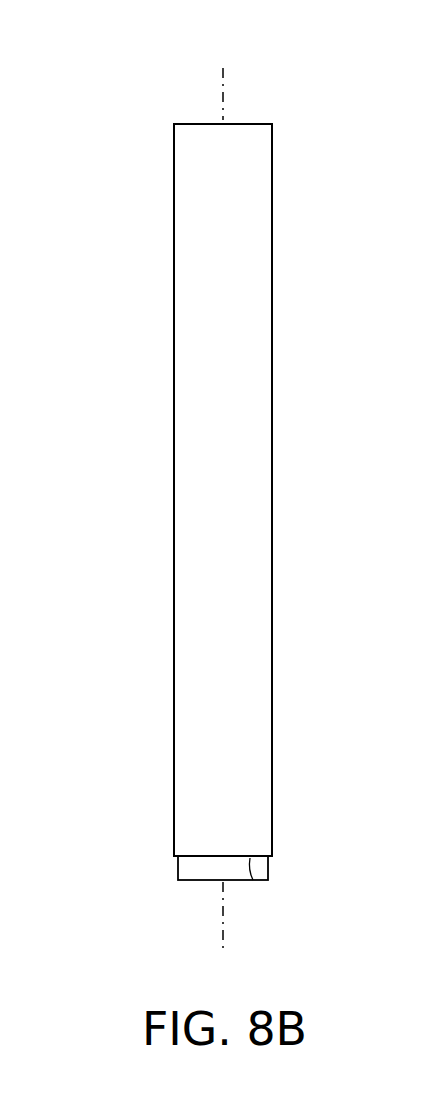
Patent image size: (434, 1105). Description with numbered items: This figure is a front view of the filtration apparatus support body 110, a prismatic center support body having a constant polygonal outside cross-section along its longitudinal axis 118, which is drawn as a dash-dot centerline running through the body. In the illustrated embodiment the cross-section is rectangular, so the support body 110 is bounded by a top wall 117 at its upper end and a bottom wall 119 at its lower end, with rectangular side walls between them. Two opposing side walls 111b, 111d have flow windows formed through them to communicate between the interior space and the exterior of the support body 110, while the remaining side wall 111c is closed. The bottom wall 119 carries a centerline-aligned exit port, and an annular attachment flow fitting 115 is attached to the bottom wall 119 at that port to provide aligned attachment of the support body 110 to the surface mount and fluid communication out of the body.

The prismatic center support body 110 is at (272, 287).
The side wall 111b is at (174, 390).
The side wall 111c is at (207, 502).
The side wall 111d is at (272, 548).
The annular attachment flow fitting 115 is at (178, 870).
The top wall 117 is at (197, 124).
The longitudinal axis 118 is at (223, 97).
The bottom wall 119 is at (253, 880).